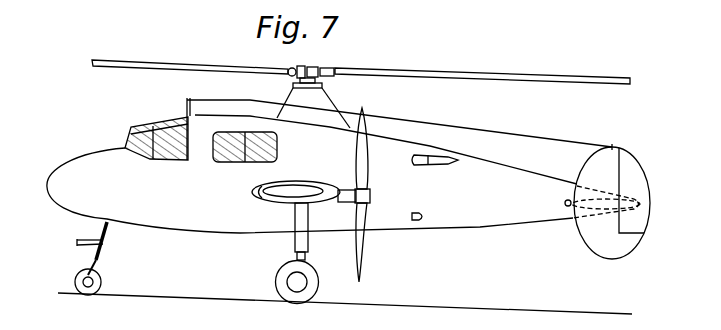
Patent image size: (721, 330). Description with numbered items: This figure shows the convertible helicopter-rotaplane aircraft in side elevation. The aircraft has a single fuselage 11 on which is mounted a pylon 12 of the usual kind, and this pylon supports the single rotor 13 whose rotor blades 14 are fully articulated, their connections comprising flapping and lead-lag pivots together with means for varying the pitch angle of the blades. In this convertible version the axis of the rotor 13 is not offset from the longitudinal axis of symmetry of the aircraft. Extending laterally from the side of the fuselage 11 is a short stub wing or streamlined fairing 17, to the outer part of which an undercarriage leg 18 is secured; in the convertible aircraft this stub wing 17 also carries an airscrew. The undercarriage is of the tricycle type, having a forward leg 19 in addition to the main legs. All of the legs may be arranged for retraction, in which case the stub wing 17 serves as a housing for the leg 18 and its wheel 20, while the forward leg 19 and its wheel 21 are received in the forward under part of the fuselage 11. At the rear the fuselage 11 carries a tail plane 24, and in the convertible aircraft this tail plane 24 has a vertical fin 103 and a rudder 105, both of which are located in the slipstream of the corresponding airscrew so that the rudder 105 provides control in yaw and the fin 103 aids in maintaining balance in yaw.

The fuselage 11 is at (385, 217).
The pylon 12 is at (295, 97).
The rotor 13 is at (330, 70).
The rotor blades 14 is at (142, 62).
The stub wing 17 is at (273, 207).
The undercarriage leg 18 is at (307, 243).
The forward leg 19 is at (105, 242).
The wheel 20 is at (285, 300).
The wheel 21 is at (95, 292).
The tail plane 24 is at (567, 205).
The vertical fin 103 is at (610, 253).
The rudder 105 is at (628, 160).